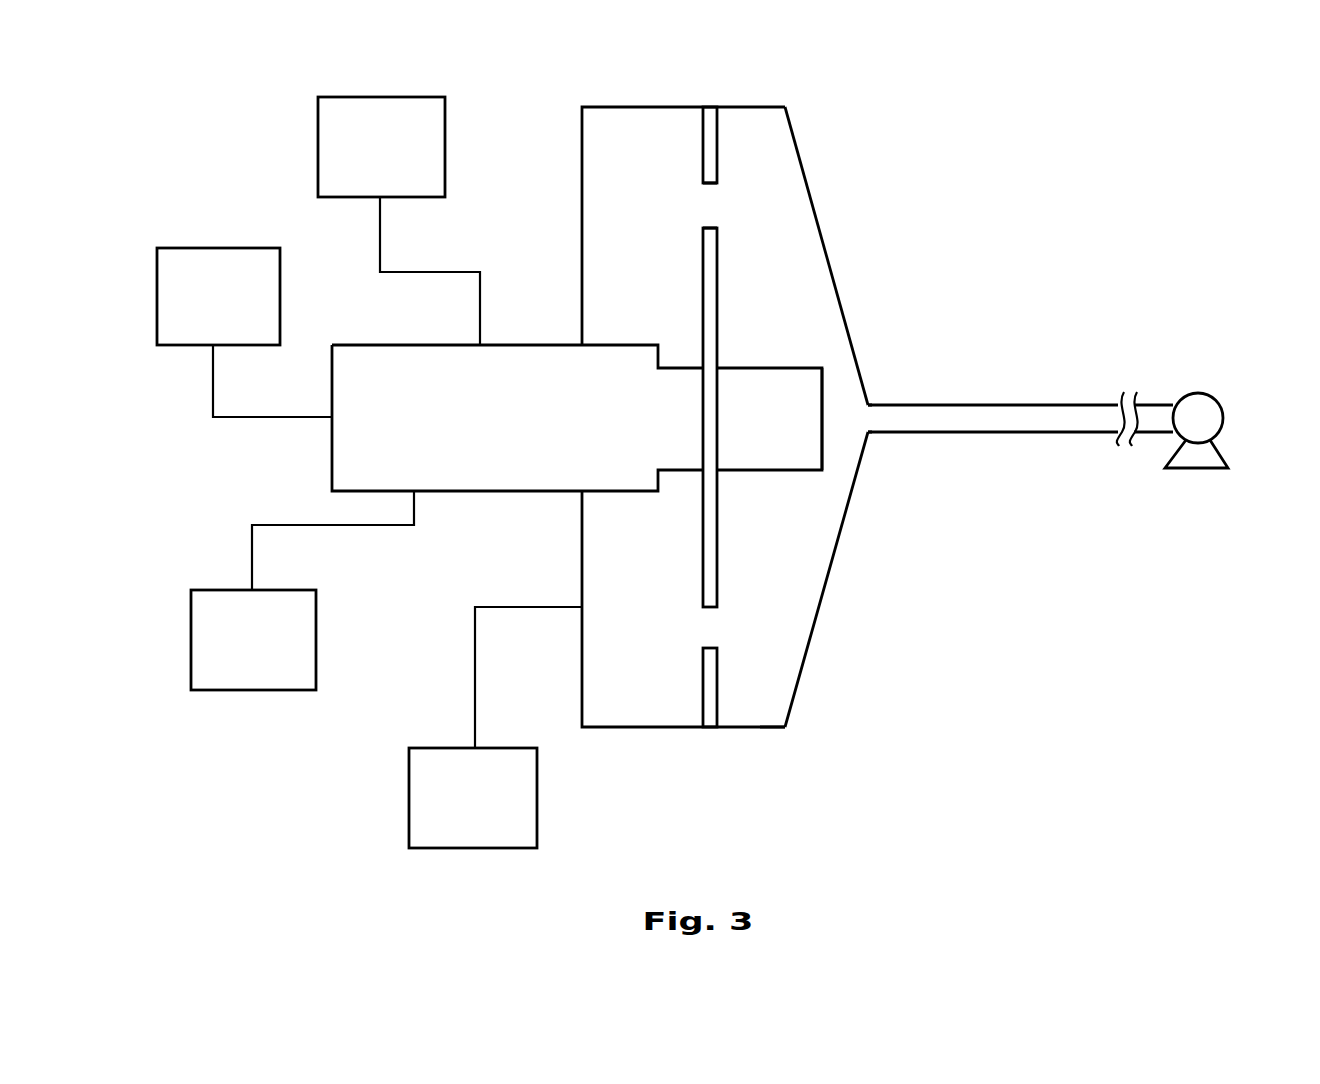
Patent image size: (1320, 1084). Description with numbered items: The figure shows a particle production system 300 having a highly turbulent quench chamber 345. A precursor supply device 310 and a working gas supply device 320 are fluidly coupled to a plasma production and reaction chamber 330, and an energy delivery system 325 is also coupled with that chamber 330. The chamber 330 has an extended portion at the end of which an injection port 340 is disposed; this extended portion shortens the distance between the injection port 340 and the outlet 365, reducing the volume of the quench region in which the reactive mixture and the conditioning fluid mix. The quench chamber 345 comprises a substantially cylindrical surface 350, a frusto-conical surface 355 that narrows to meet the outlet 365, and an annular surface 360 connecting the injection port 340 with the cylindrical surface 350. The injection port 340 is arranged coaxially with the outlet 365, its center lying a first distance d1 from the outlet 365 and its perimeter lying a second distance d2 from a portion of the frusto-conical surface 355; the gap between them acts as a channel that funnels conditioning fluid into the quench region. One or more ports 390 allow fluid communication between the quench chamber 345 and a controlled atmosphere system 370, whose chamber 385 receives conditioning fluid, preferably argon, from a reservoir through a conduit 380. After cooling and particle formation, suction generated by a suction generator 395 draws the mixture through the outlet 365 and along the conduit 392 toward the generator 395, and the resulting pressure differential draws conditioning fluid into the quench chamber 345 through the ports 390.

The particle production system 300 is at (1033, 144).
The precursor supply device 310 is at (359, 161).
The working gas supply device 320 is at (196, 311).
The energy delivery system 325 is at (231, 654).
The plasma production and reaction chamber 330 is at (473, 435).
The injection port 340 is at (822, 365).
The quench chamber 345 is at (763, 590).
The cylindrical surface 350 is at (763, 727).
The frusto-conical surface 355 is at (795, 135).
The annular surface 360 is at (703, 577).
The outlet 365 is at (872, 402).
The controlled atmosphere system 370 is at (451, 814).
The conduit 380 is at (475, 690).
The chamber 385 is at (620, 567).
The ports 390 is at (710, 203).
The conduit 392 is at (1003, 433).
The suction generator 395 is at (1222, 403).
The first distance d1 is at (845, 432).
The second distance d2 is at (823, 470).